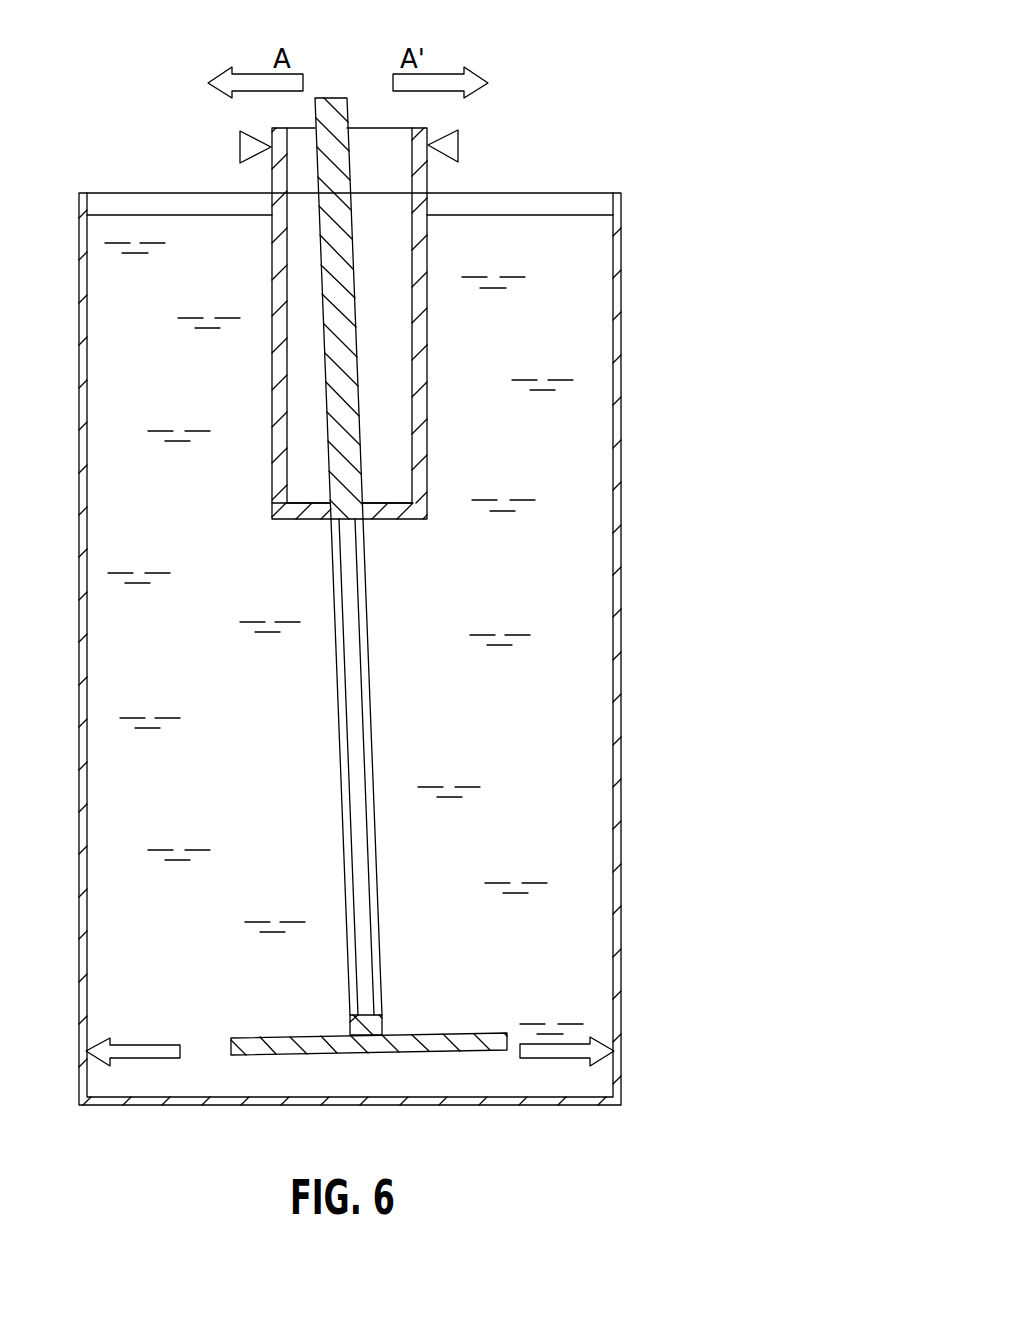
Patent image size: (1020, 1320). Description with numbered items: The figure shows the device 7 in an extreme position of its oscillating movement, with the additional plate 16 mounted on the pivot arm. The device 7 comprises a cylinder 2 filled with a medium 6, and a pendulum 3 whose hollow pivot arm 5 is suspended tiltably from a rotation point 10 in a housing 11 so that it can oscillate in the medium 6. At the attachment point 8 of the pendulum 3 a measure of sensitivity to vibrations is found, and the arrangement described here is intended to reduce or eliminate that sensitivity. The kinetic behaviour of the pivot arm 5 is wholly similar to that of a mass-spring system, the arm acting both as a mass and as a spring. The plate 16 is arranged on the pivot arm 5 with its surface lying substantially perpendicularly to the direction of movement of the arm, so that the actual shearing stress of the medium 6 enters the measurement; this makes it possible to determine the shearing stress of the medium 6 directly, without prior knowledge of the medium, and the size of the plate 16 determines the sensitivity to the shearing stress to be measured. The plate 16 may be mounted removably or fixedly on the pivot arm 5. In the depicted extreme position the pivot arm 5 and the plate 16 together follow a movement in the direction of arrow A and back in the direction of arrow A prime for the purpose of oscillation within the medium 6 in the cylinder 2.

The cylinder 2 is at (617, 289).
The pendulum 3 is at (458, 340).
The hollow pivot arm 5 is at (374, 722).
The medium 6 is at (465, 600).
The device 7 is at (569, 158).
The attachment point 8 is at (240, 147).
The rotation point 10 is at (363, 522).
The housing 11 is at (284, 272).
The plate 16 is at (435, 1037).